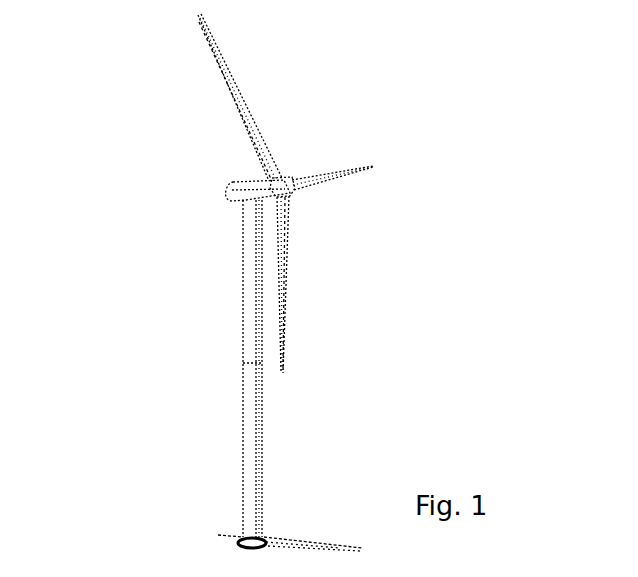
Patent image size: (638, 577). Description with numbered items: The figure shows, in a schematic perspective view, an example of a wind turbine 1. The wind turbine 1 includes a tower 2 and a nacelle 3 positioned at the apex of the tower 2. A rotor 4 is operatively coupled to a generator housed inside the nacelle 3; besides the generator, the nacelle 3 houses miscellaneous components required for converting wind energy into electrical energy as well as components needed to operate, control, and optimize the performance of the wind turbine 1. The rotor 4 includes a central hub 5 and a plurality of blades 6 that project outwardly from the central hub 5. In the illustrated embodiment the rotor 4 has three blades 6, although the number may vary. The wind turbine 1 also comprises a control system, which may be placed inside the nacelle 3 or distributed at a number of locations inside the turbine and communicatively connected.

The wind turbine 1 is at (112, 144).
The tower 2 is at (248, 312).
The nacelle 3 is at (238, 183).
The rotor 4 is at (356, 257).
The central hub 5 is at (283, 181).
The blades 6 is at (245, 105).